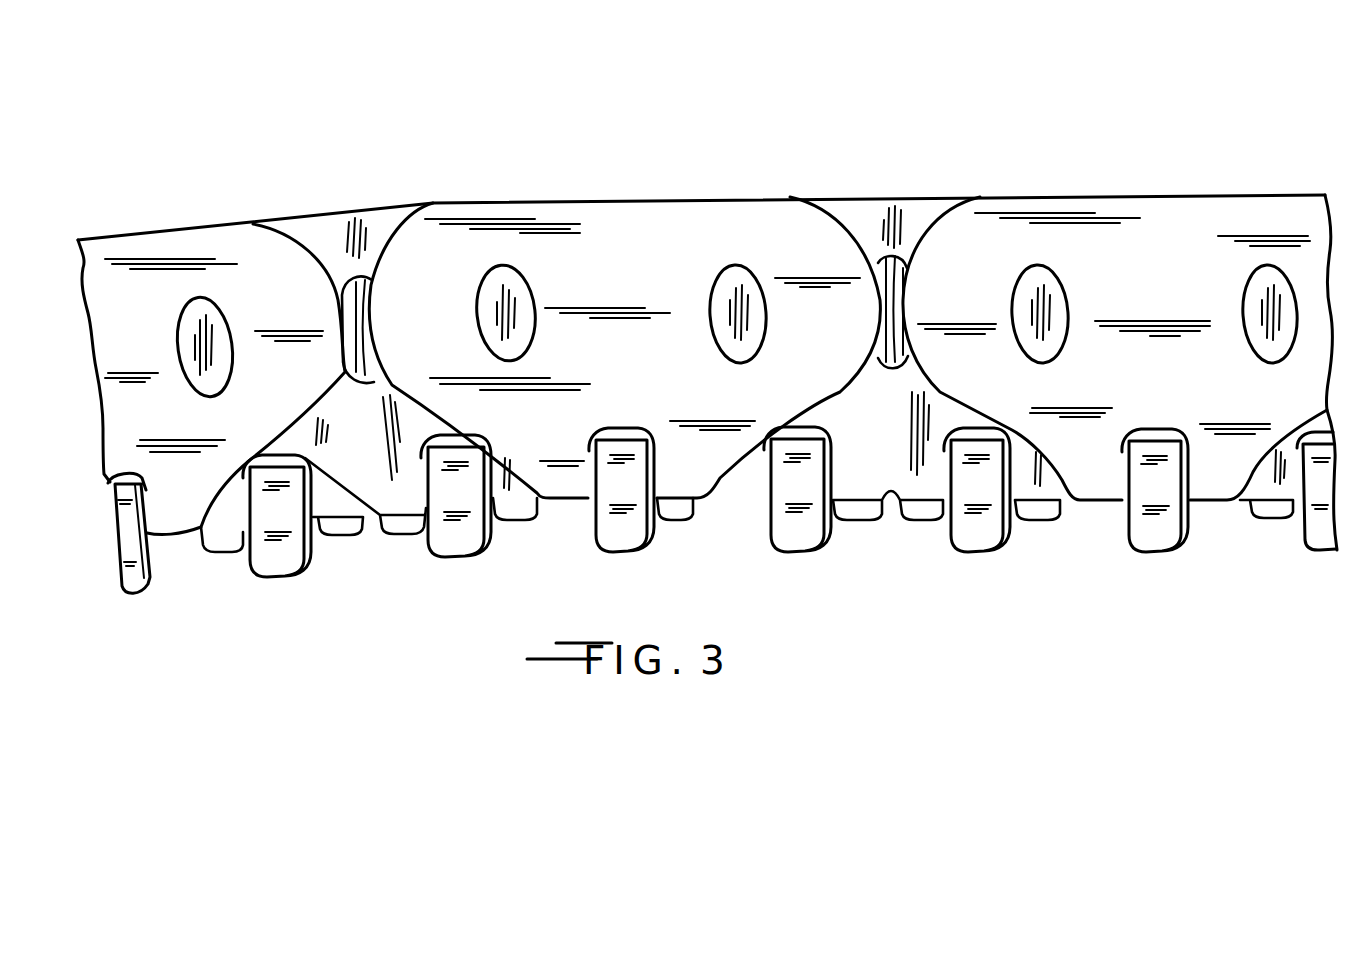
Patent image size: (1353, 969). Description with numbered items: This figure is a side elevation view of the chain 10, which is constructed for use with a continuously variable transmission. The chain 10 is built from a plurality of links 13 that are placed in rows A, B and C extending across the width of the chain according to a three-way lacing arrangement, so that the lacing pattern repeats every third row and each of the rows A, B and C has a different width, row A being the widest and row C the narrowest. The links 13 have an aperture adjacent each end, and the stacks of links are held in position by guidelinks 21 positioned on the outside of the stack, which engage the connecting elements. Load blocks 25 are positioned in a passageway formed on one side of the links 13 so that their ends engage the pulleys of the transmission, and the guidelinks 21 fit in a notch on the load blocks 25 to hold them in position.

The chain 10 is at (702, 124).
The guidelink 21 is at (767, 217).
The link 13 is at (920, 217).
The load block 25 is at (632, 538).
The row A is at (557, 483).
The row B is at (400, 494).
The row C is at (336, 497).